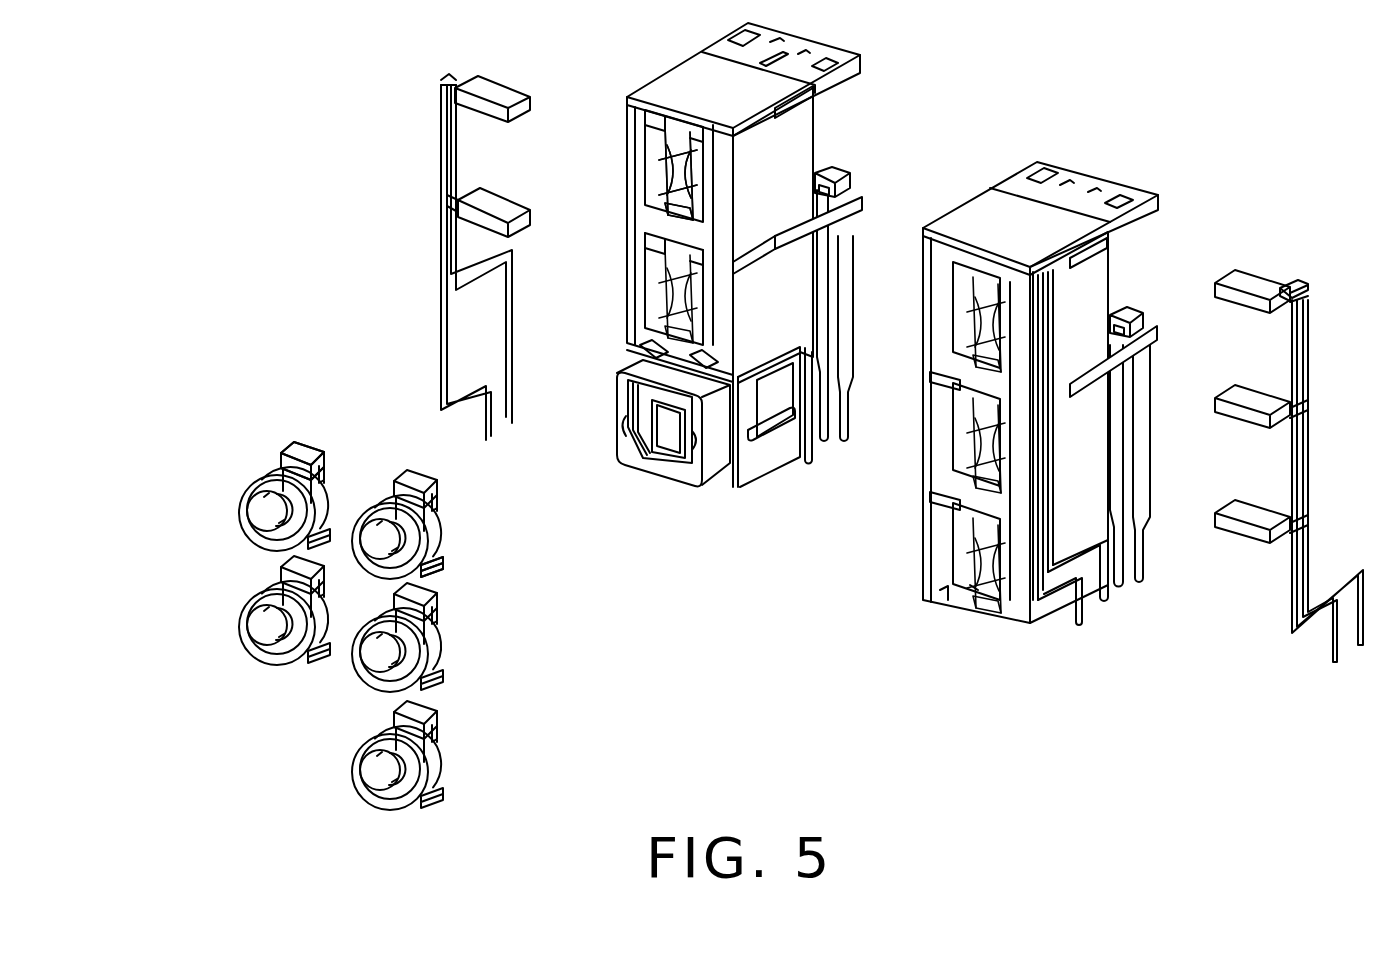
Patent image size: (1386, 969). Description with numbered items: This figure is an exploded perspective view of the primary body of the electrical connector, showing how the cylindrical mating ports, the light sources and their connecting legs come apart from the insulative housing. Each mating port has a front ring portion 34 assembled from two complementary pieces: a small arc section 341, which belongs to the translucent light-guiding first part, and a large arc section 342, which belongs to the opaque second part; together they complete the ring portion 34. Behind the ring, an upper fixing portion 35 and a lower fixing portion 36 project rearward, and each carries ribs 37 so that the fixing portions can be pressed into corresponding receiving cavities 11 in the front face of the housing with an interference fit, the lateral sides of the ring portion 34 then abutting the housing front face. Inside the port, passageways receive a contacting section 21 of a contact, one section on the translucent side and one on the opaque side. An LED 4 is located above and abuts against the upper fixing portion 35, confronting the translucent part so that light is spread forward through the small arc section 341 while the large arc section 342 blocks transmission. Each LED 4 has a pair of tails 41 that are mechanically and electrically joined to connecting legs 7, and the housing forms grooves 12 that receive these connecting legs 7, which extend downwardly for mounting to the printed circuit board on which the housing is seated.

The receiving cavities 11 is at (677, 205).
The contacting section 21 is at (678, 153).
The grooves 12 is at (1053, 292).
The LED 4 is at (1300, 429).
The tails 41 is at (1295, 293).
The connecting legs 7 is at (1305, 387).
The ring portion 34 is at (209, 544).
The small arc section 341 is at (280, 470).
The large arc section 342 is at (250, 490).
The upper fixing portion 35 is at (438, 493).
The lower fixing portion 36 is at (437, 578).
The ribs 37 is at (325, 460).